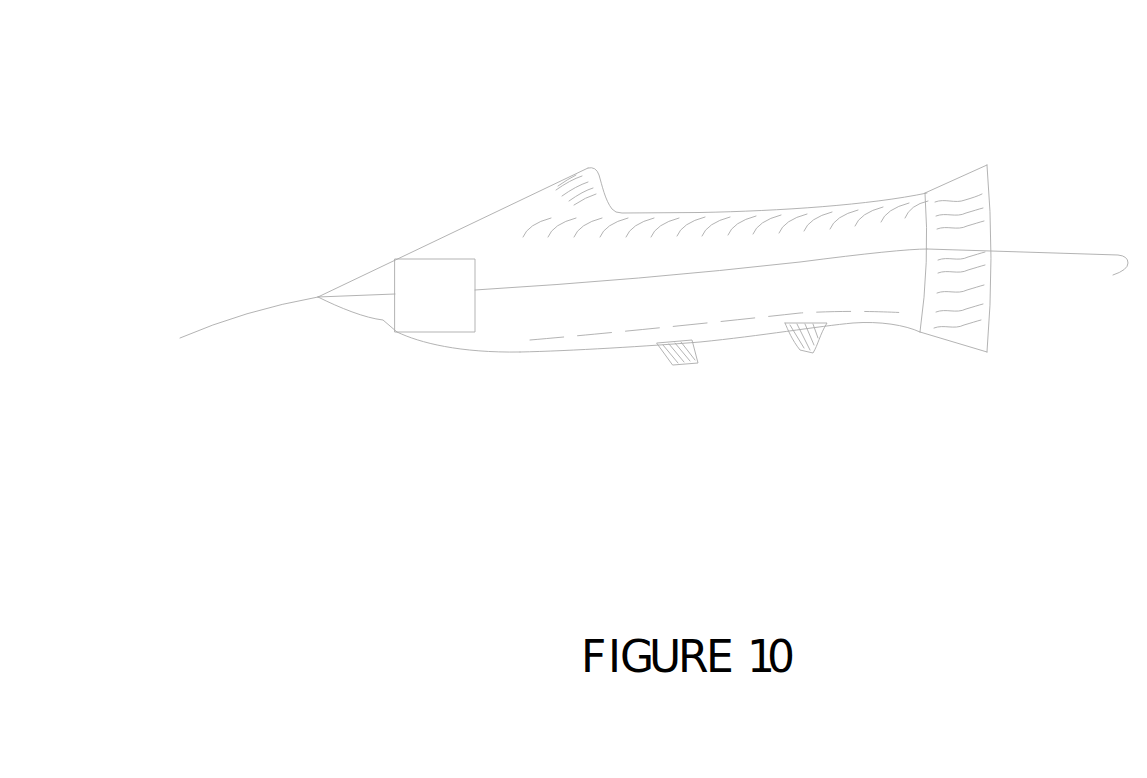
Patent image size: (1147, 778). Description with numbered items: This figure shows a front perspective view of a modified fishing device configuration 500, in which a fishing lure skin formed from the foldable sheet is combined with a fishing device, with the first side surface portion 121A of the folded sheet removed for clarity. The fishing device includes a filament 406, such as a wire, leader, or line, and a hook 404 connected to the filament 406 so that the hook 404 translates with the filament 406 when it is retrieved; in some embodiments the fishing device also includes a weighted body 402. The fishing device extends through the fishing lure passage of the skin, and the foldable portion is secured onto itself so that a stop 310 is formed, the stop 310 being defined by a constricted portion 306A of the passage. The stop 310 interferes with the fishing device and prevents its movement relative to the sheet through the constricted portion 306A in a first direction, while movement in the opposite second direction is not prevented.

The modified fishing device configuration 500 is at (788, 118).
The weighted body 402 is at (443, 290).
The constricted portion 306A is at (388, 276).
The stop 310 is at (390, 325).
The first side surface portion 121A is at (488, 322).
The filament 406 is at (242, 317).
The hook 404 is at (1113, 275).